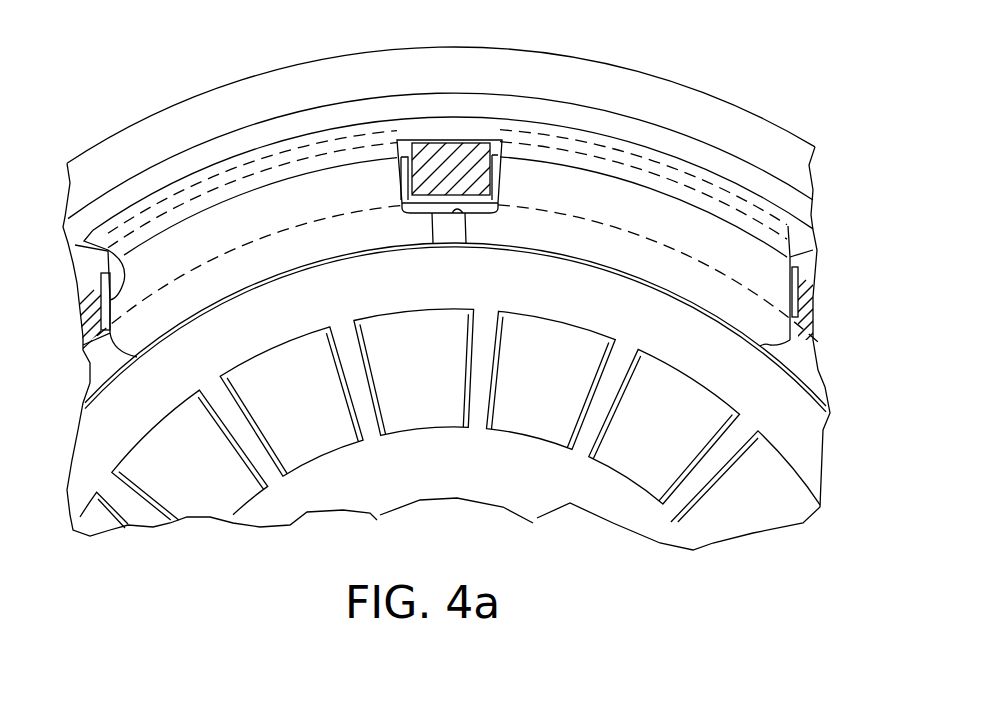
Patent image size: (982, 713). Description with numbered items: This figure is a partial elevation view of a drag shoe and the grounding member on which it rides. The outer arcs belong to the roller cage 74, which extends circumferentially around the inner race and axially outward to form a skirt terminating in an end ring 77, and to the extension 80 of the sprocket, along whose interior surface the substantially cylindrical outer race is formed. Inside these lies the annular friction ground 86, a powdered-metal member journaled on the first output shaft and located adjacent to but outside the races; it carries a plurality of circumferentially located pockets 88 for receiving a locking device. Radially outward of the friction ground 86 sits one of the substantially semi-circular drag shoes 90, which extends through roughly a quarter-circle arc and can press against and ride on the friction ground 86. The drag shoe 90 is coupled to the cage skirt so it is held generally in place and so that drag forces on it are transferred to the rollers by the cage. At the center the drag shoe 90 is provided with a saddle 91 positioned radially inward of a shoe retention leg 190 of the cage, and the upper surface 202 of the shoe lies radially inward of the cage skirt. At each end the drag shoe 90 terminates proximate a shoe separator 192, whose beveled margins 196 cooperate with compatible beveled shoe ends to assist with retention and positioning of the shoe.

The roller cage 74 is at (713, 160).
The end ring 77 is at (157, 177).
The extension 80 is at (287, 93).
The friction ground 86 is at (613, 306).
The pockets 88 is at (627, 453).
The drag shoes 90 is at (277, 222).
The saddle 91 is at (435, 230).
The shoe retention legs 190 is at (500, 183).
The shoe separators 192 is at (803, 335).
The margins 196 is at (109, 251).
The upper surface 202 is at (463, 238).